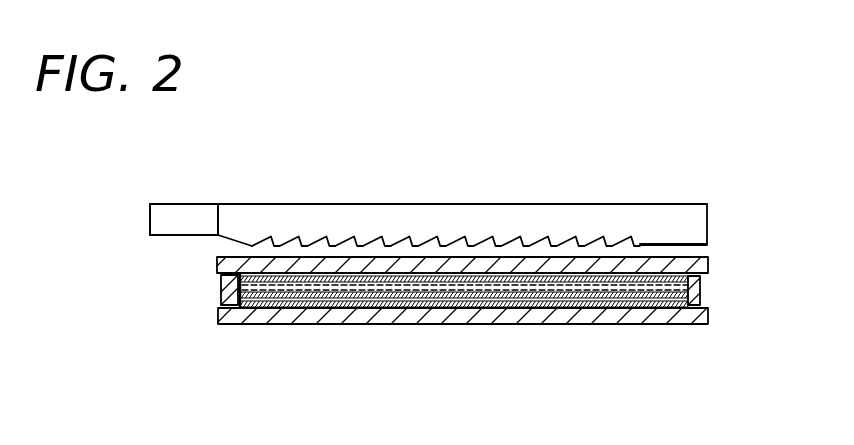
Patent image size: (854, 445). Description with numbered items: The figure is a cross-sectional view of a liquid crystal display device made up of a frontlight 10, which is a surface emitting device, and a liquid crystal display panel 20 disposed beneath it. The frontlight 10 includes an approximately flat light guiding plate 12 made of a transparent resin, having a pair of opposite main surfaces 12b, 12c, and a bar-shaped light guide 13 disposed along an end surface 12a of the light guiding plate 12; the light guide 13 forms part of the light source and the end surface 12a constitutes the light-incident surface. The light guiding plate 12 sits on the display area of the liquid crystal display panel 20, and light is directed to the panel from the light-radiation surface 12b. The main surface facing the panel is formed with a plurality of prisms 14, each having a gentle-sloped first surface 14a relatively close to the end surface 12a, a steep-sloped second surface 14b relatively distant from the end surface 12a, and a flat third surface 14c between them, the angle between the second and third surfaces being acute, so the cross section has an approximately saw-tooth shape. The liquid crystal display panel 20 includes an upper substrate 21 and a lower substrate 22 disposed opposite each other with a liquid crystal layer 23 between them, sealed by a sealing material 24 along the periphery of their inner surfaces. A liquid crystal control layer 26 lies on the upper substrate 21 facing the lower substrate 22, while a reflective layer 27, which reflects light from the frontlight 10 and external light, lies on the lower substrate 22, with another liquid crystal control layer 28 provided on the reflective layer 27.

The frontlight 10 is at (684, 200).
The light guiding plate 12 is at (697, 225).
The end surface 12a is at (213, 233).
The light-radiation surface 12b is at (706, 246).
The main surface 12c is at (636, 203).
The bar-shaped light guide 13 is at (162, 233).
The prisms 14 is at (392, 115).
The first surface 14a is at (360, 234).
The second surface 14b is at (340, 234).
The third surface 14c is at (308, 234).
The liquid crystal display panel 20 is at (672, 330).
The upper substrate 21 is at (700, 265).
The lower substrate 22 is at (700, 316).
The liquid crystal layer 23 is at (695, 290).
The sealing material 24 is at (230, 319).
The liquid crystal control layer 26 is at (482, 286).
The reflective layer 27 is at (548, 296).
The liquid crystal control layer 28 is at (616, 304).